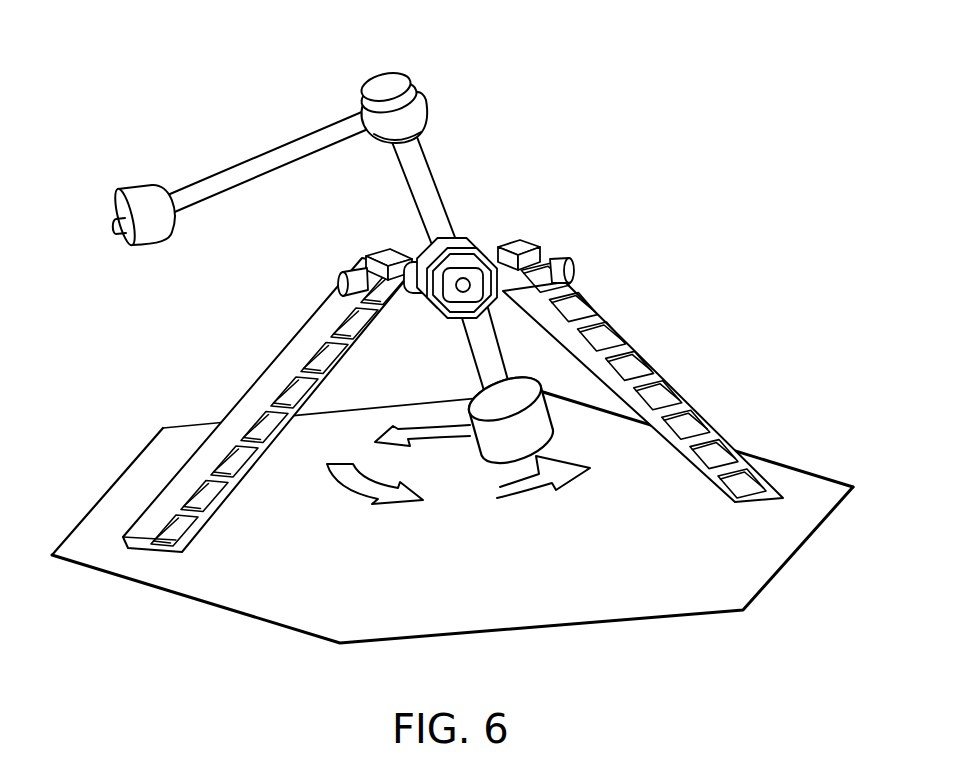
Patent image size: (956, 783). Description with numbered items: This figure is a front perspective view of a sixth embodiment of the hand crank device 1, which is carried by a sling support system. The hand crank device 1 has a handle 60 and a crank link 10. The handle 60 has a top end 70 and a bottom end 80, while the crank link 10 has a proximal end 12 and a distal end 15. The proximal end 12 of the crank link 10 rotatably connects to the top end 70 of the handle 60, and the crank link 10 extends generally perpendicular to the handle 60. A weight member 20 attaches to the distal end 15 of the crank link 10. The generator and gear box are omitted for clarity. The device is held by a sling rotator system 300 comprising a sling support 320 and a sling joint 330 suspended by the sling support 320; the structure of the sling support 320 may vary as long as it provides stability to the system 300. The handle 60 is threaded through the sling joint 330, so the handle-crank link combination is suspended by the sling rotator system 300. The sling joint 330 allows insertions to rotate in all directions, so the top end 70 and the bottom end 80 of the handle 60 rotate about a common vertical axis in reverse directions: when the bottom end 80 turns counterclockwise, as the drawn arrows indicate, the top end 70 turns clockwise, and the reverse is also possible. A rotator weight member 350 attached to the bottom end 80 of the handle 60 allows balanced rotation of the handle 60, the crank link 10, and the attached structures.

The hand crank device 1 is at (657, 79).
The crank link 10 is at (254, 136).
The proximal end 12 is at (358, 122).
The distal end 15 is at (181, 200).
The weight member 20 is at (138, 202).
The handle 60 is at (436, 218).
The top end 70 is at (406, 146).
The bottom end 80 is at (487, 358).
The sling rotator system 300 is at (598, 251).
The sling support 320 is at (275, 375).
The sling joint 330 is at (478, 268).
The rotator weight member 350 is at (538, 425).